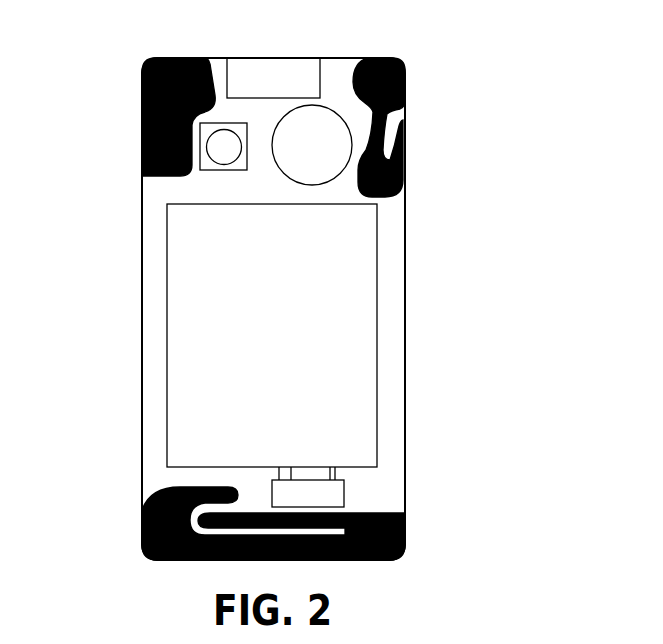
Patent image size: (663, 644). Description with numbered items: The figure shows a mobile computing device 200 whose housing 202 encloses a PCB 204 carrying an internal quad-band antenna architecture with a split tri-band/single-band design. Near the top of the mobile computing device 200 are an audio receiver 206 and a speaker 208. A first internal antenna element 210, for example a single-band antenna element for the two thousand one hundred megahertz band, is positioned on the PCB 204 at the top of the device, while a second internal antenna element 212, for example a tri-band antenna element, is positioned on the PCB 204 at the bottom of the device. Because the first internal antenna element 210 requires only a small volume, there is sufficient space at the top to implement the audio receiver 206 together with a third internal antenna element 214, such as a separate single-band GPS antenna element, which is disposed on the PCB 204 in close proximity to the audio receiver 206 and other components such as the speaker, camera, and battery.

The mobile computing device 200 is at (432, 54).
The device housing 202 is at (142, 302).
The PCB 204 is at (288, 198).
The audio receiver 206 is at (250, 67).
The speaker 208 is at (338, 110).
The first internal antenna element 210 is at (141, 128).
The second internal antenna element 212 is at (236, 518).
The third internal antenna element 214 is at (418, 137).